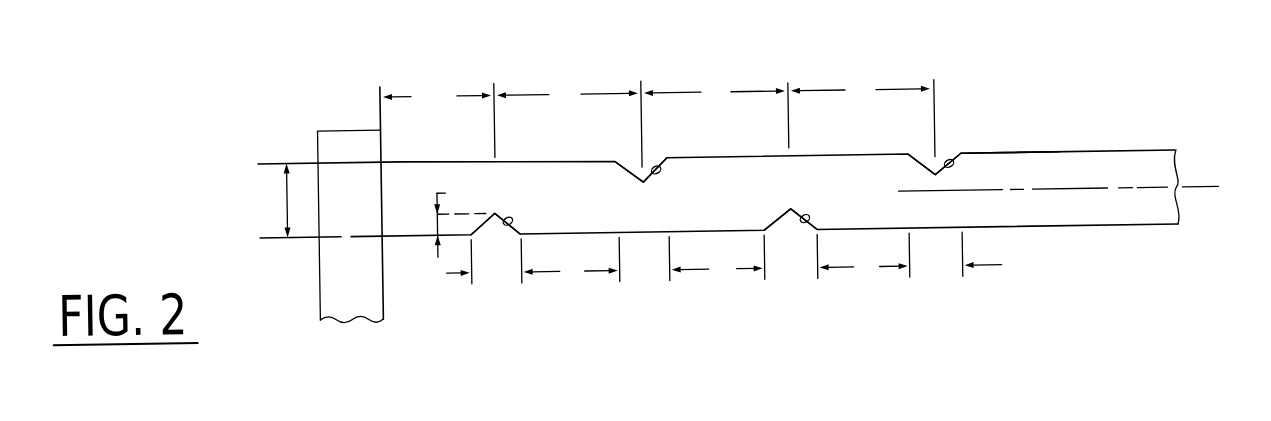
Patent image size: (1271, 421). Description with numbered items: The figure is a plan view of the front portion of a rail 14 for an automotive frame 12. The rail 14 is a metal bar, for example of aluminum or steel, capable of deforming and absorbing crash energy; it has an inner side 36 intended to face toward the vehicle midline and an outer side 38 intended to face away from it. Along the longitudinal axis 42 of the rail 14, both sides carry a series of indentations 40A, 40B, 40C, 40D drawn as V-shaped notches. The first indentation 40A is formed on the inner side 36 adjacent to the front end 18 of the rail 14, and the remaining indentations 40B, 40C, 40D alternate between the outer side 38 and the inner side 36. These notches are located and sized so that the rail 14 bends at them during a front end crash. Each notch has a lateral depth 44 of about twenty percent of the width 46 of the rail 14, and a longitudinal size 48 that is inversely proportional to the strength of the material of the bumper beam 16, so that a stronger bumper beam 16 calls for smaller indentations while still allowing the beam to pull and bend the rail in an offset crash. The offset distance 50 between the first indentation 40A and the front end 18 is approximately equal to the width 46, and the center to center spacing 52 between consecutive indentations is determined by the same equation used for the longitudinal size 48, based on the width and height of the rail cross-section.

The automotive frame 12 is at (277, 76).
The rail 14 is at (749, 180).
The bumper beam 16 is at (314, 200).
The front end 18 is at (379, 188).
The inner side 36 is at (1071, 240).
The outer side 38 is at (972, 164).
The first indentation 40A is at (510, 226).
The indentation 40B is at (657, 178).
The indentation 40C is at (806, 228).
The indentation 40D is at (951, 175).
The longitudinal axis 42 is at (1190, 201).
The lateral depth (LD) 44 is at (434, 225).
The width (W) 46 is at (247, 202).
The longitudinal size (LS) 48 is at (638, 298).
The offset distance (OD) 50 is at (434, 80).
The center to center spacing (S) 52 is at (848, 86).